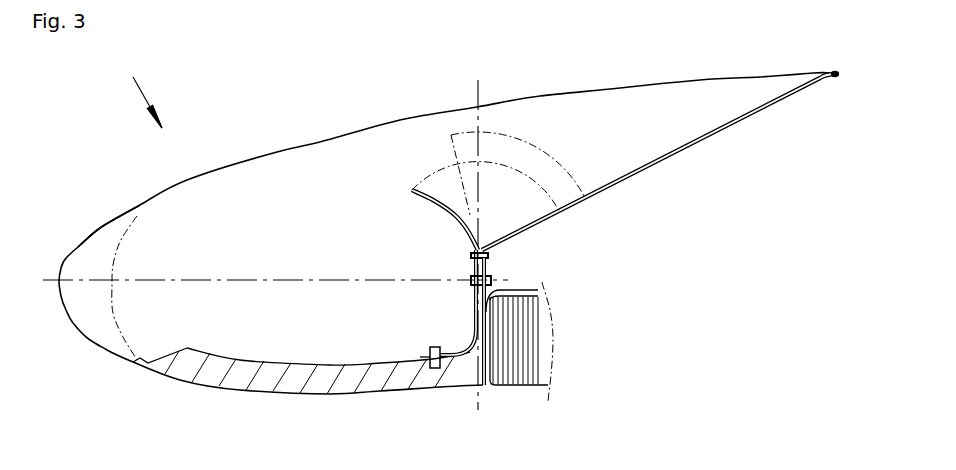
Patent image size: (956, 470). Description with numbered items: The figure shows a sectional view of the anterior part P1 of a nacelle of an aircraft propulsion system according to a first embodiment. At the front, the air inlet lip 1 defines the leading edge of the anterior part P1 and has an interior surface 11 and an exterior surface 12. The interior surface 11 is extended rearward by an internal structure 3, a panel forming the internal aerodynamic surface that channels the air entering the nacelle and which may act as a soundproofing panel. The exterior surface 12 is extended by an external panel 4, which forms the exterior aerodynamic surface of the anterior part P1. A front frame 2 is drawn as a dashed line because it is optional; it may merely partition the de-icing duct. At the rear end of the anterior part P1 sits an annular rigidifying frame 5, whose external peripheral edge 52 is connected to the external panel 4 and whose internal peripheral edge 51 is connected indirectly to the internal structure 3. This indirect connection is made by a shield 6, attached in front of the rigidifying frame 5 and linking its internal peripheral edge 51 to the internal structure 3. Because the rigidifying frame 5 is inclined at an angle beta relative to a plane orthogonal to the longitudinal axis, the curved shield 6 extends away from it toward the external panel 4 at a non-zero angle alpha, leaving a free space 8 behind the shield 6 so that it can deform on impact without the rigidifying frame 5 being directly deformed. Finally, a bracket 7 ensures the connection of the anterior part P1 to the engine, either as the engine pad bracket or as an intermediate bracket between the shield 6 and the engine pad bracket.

The air inlet lip 1 is at (78, 328).
The front frame 2 is at (116, 252).
The internal structure 3 is at (228, 373).
The external panel 4 is at (277, 152).
The rigidifying frame 5 is at (650, 164).
The shield 6 is at (447, 213).
The bracket 7 is at (521, 308).
The free space 8 is at (510, 202).
The interior surface 11 is at (104, 353).
The exterior surface 12 is at (93, 218).
The internal peripheral edge 51 is at (490, 262).
The external peripheral edge 52 is at (830, 80).
The anterior part P1 is at (133, 77).